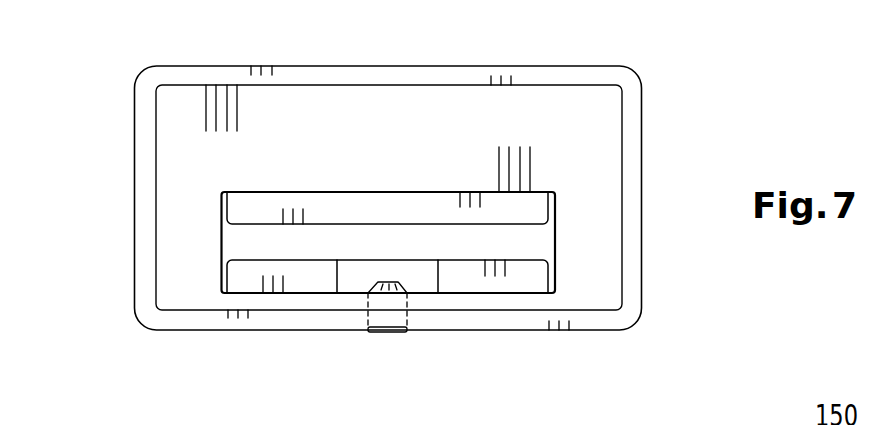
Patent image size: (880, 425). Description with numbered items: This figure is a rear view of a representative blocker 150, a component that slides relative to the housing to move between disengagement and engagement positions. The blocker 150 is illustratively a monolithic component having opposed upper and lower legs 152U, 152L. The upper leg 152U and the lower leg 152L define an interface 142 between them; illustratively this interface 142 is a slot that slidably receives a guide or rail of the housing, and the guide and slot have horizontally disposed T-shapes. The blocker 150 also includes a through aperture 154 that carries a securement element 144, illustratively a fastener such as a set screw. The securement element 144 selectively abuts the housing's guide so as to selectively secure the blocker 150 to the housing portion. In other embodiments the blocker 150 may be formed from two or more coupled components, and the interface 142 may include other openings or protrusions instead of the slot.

The blocker 150 is at (667, 88).
The interface 142 is at (233, 239).
The upper leg 152U is at (238, 208).
The lower leg 152L is at (230, 275).
The securement element 144 is at (388, 332).
The through aperture 154 is at (368, 312).